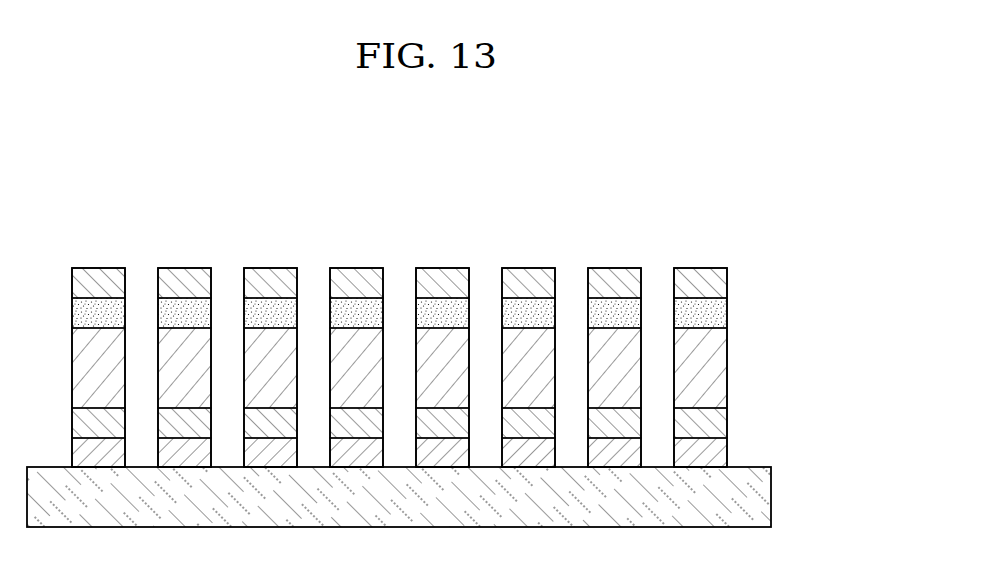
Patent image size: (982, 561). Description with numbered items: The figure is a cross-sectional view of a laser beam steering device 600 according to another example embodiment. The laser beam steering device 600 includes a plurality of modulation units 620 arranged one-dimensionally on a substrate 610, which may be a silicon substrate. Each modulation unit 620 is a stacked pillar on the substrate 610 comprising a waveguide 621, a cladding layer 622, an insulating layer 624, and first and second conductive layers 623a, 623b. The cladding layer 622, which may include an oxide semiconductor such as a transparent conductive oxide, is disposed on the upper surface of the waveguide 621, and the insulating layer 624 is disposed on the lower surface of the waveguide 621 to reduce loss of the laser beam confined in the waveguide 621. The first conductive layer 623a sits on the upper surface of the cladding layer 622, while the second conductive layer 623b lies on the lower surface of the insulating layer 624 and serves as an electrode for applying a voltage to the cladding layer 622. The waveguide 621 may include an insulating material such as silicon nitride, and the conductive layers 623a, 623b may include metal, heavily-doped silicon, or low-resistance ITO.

The laser beam steering device 600 is at (439, 335).
The substrate 610 is at (771, 497).
The modulation unit 620 is at (449, 318).
The waveguide 621 is at (727, 367).
The cladding layer 622 is at (727, 312).
The first conductive layer 623a is at (727, 283).
The second conductive layer 623b is at (727, 452).
The insulating layer 624 is at (727, 422).